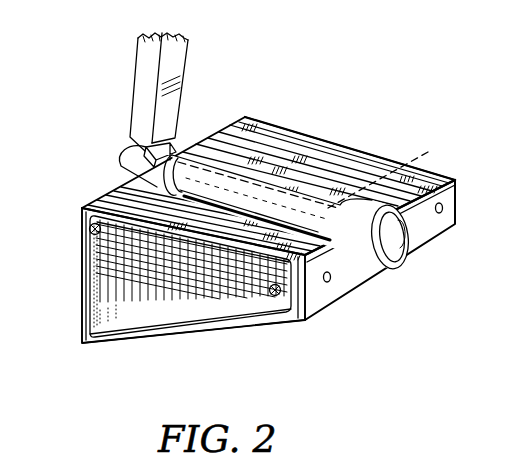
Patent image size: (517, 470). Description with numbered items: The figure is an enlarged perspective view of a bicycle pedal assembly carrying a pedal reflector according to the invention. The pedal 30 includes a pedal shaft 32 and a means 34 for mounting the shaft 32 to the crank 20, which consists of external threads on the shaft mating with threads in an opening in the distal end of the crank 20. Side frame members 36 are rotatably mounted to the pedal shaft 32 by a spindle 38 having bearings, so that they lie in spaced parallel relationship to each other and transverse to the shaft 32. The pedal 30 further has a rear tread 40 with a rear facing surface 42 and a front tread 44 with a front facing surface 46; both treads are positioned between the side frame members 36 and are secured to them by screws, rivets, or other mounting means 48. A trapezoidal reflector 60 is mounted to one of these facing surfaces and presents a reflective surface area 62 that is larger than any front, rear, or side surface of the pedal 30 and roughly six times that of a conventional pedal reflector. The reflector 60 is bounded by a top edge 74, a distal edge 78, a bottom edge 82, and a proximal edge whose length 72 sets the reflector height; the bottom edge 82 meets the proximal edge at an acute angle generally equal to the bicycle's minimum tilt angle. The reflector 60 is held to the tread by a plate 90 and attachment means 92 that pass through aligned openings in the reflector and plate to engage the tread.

The crank 20 is at (177, 70).
The pedal 30 is at (338, 132).
The pedal shaft 32 is at (388, 171).
The means for mounting the shaft 34 is at (173, 143).
The side frame members 36 is at (134, 149).
The spindle 38 is at (230, 167).
The rear tread 40 is at (422, 170).
The rear facing surface 42 is at (378, 155).
The front tread 44 is at (308, 256).
The front facing surface 46 is at (83, 217).
The mounting means 48 is at (447, 206).
The reflector 60 is at (168, 318).
The reflective surface area 62 is at (128, 322).
The length of the proximal edge 72 is at (82, 303).
The top edge 74 is at (128, 230).
The distal edge 78 is at (309, 298).
The bottom edge 82 is at (217, 327).
The plate 90 is at (247, 323).
The attachment means 92 is at (100, 242).